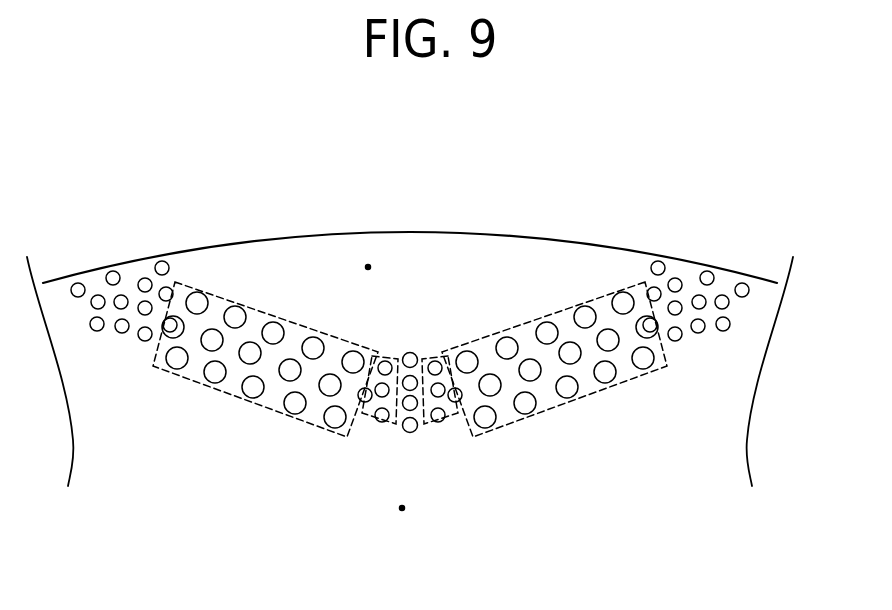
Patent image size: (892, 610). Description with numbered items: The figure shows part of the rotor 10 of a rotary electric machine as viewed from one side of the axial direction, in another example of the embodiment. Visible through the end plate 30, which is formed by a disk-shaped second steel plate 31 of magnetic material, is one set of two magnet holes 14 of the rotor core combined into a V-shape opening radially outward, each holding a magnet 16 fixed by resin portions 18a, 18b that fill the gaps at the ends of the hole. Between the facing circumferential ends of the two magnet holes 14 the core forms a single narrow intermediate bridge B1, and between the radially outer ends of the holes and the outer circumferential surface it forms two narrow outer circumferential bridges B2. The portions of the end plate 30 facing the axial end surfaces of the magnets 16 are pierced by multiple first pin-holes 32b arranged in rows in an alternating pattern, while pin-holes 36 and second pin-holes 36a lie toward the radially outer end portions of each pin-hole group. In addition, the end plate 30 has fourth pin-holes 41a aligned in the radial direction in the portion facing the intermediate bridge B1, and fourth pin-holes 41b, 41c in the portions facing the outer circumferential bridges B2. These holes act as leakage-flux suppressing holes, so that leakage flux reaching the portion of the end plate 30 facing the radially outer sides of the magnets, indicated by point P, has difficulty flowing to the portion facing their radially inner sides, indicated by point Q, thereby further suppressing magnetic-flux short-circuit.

The rotor 10 is at (519, 197).
The magnet holes 14 is at (230, 400).
The magnets 16 is at (314, 330).
The resin portion 18a is at (357, 414).
The resin portion 18b is at (112, 297).
The end plate 30 is at (702, 408).
The second steel plate 31 is at (737, 357).
The first pin-holes 32b is at (237, 313).
The central small holes 36 is at (402, 358).
The second pin-holes 36a is at (158, 342).
The fourth pin-holes 41a is at (401, 410).
The fourth pin-holes 41b is at (115, 272).
The fourth pin-holes 41c is at (700, 277).
The intermediate bridge B1 is at (416, 352).
The outer circumferential bridges B2 is at (131, 257).
The point P is at (369, 264).
The point Q is at (403, 510).